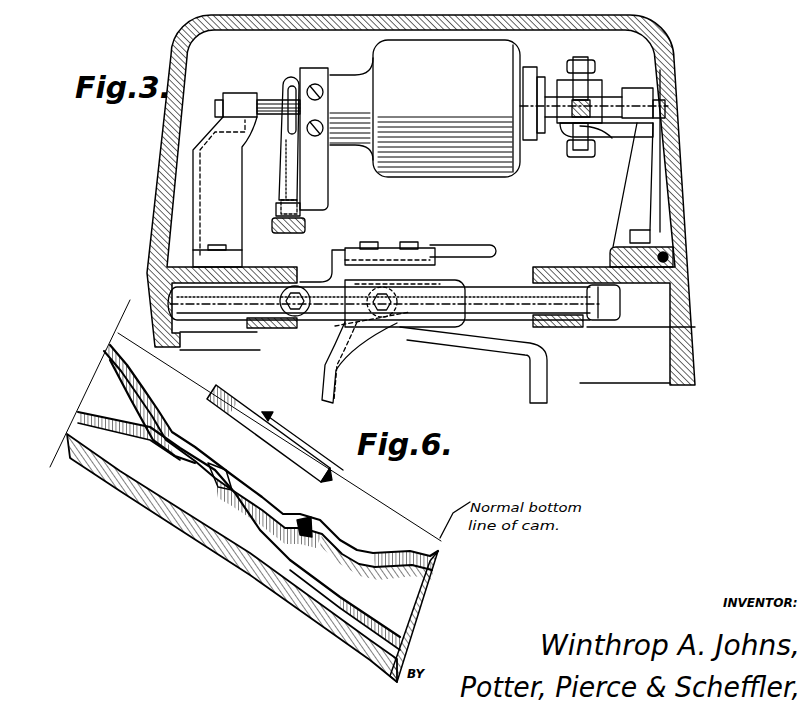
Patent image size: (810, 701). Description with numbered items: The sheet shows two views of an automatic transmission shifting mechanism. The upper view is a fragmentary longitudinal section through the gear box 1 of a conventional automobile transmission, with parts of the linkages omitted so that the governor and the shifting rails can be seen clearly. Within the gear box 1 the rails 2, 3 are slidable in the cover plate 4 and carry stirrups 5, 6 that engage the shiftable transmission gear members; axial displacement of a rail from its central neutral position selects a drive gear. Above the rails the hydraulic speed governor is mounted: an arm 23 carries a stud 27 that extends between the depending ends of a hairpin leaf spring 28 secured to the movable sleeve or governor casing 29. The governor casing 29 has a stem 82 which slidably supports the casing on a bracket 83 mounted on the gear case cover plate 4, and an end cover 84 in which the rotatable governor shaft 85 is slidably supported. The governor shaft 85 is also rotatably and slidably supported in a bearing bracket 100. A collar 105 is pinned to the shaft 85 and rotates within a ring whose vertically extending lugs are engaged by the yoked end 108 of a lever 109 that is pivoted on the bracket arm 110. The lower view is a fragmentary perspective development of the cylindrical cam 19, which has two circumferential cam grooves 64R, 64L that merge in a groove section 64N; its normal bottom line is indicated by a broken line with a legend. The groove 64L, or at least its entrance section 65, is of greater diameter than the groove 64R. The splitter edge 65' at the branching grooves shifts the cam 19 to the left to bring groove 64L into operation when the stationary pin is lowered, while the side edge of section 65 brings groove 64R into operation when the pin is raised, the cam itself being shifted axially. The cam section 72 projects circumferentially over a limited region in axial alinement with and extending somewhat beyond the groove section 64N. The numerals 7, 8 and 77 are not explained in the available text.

In FIG. 3, the gear box 1 is at (692, 345).
In FIG. 3, the rail 2 is at (384, 333).
In FIG. 3, the rail 3 is at (603, 319).
In FIG. 3, the cover plate 4 is at (693, 293).
In FIG. 3, the stirrup 5 is at (468, 348).
In FIG. 3, the stirrup 6 is at (360, 355).
In FIG. 3, the bracket 7 is at (382, 275).
In FIG. 3, the arm 8 is at (463, 242).
In FIG. 3, the arm 23 is at (276, 233).
In FIG. 3, the stud 27 is at (280, 212).
In FIG. 3, the hairpin leaf spring 28 is at (281, 160).
In FIG. 3, the governor casing 29 is at (333, 80).
In FIG. 3, the screw 77 is at (673, 257).
In FIG. 3, the stem 82 is at (262, 103).
In FIG. 3, the bracket 83 is at (290, 183).
In FIG. 3, the end cover 84 is at (523, 56).
In FIG. 3, the governor shaft 85 is at (553, 100).
In FIG. 3, the bearing bracket 100 is at (647, 100).
In FIG. 3, the collar 105 is at (597, 90).
In FIG. 3, the yoked end 108 is at (582, 73).
In FIG. 3, the lever 109 is at (563, 133).
In FIG. 3, the bracket arm 110 is at (613, 141).
In FIG. 6, the cam 19 is at (373, 509).
In FIG. 6, the cam groove 64L is at (111, 345).
In FIG. 6, the groove section 64N is at (190, 463).
In FIG. 6, the cam groove 64R is at (79, 413).
In FIG. 6, the entrance section 65 is at (216, 457).
In FIG. 6, the splitter edge 65' is at (296, 509).
In FIG. 6, the cam section 72 is at (240, 412).